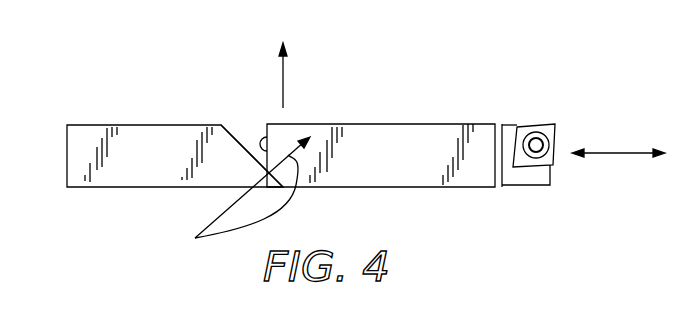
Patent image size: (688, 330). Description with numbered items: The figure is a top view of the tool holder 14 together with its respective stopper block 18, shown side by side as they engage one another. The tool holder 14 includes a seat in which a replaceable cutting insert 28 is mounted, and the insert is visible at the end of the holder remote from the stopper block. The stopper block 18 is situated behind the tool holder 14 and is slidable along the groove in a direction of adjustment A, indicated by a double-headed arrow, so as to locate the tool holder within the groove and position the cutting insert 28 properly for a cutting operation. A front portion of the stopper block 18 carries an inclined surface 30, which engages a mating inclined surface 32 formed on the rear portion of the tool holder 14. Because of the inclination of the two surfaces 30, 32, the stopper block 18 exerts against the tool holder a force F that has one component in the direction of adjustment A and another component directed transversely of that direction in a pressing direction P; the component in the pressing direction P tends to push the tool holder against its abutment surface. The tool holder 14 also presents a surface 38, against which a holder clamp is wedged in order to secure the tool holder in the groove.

The stopper block 18 is at (128, 125).
The tool holder 14 is at (388, 122).
The inclined surface 30 is at (240, 143).
The inclined surface 32 is at (268, 142).
The surface 38 is at (433, 145).
The cutting insert 28 is at (545, 125).
The pressing direction P is at (281, 77).
The force F is at (241, 198).
The direction of adjustment A is at (617, 150).